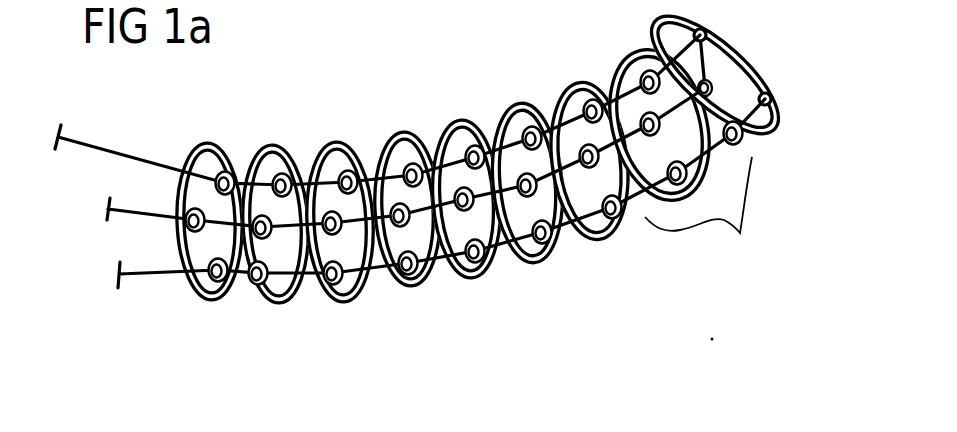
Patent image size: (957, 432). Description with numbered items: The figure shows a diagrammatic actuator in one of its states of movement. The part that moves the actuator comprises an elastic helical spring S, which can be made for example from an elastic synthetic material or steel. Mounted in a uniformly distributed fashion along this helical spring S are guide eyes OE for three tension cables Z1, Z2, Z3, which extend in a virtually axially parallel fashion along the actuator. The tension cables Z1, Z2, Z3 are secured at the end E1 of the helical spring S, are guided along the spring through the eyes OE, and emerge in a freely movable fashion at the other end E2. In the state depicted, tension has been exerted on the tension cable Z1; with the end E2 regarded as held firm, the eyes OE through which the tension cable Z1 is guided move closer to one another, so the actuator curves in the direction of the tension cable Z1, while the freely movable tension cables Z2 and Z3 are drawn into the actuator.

The end E1 is at (740, 49).
The end E2 is at (213, 147).
The helical spring S is at (578, 87).
The tension cable Z1 is at (137, 157).
The tension cable Z2 is at (139, 216).
The tension cable Z3 is at (158, 276).
The guide eyes OE is at (704, 219).